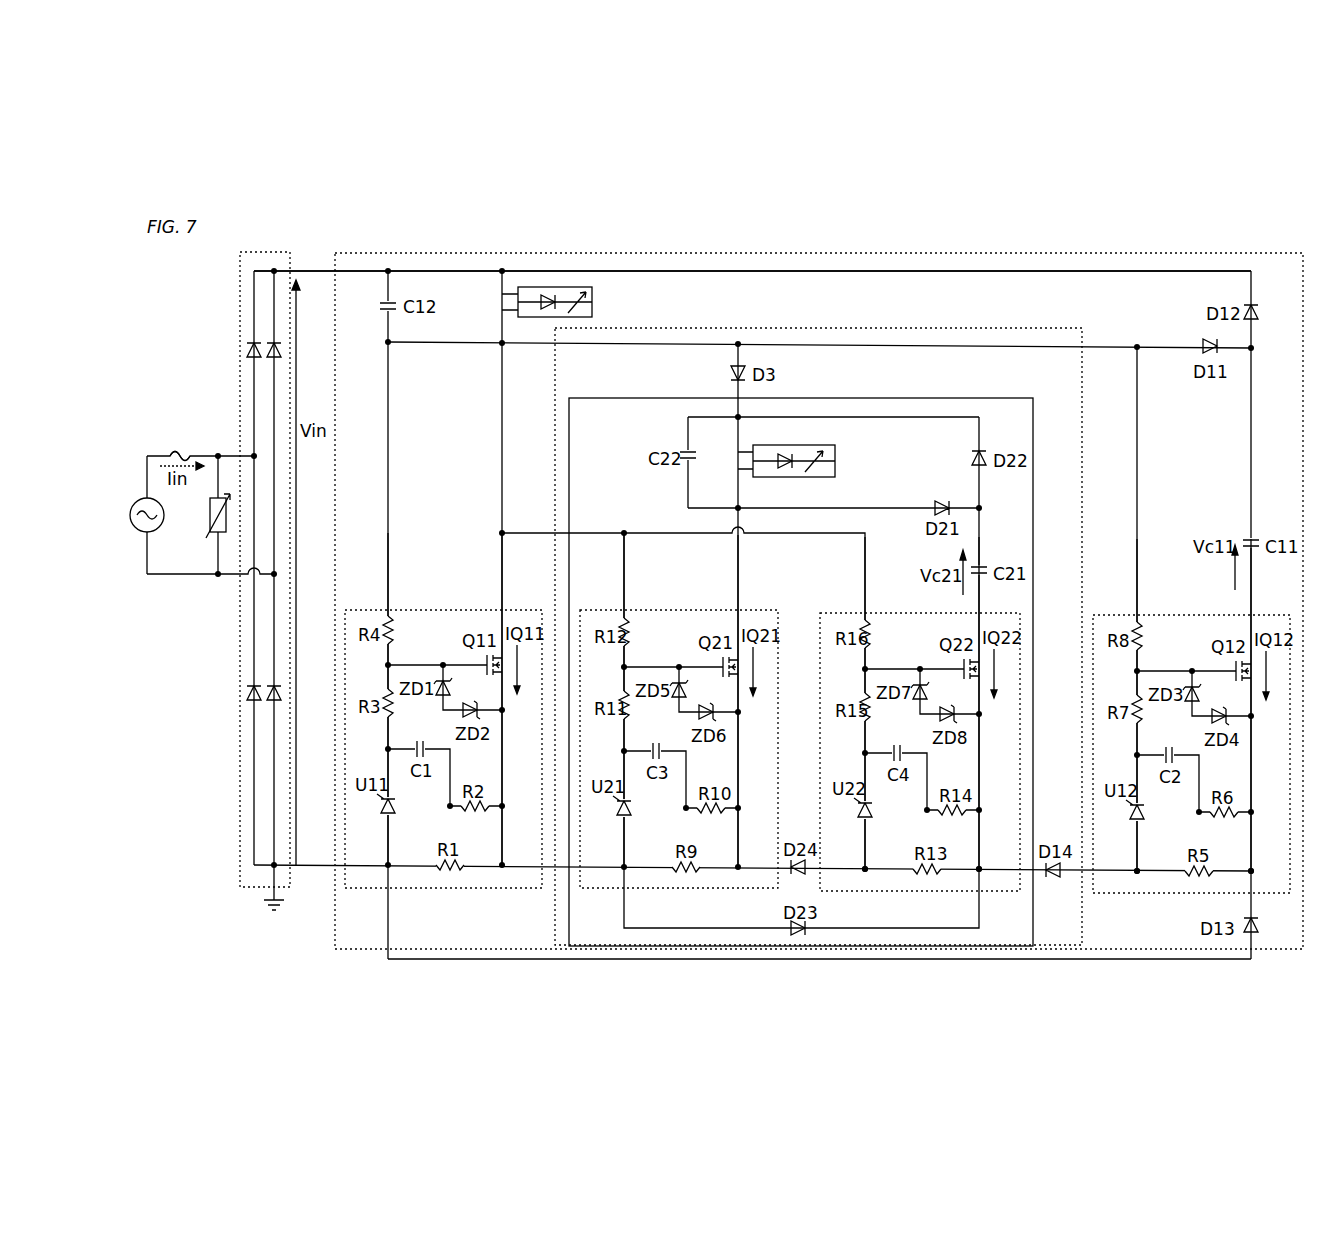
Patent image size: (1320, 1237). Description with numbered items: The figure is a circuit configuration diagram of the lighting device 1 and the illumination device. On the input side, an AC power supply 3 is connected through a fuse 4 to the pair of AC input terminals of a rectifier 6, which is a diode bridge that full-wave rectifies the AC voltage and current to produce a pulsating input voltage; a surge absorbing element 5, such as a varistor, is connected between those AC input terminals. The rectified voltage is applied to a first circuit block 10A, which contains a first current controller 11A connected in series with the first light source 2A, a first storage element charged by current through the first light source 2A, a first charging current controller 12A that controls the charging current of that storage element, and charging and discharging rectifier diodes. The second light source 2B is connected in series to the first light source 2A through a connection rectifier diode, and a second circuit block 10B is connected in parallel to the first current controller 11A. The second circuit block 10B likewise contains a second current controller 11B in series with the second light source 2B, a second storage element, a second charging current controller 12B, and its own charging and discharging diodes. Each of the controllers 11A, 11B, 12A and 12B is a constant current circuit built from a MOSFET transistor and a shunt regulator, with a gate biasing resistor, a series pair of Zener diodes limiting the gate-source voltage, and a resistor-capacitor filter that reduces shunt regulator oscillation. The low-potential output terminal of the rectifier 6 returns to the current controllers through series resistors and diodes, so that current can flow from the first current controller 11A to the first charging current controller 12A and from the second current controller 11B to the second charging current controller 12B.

The lighting device 1 is at (712, 243).
The first light source 2A is at (592, 300).
The second light source 2B is at (835, 460).
The AC power supply 3 is at (158, 528).
The fuse 4 is at (183, 453).
The surge absorbing element 5 is at (210, 521).
The rectifier 6 is at (234, 278).
The first circuit block 10A is at (872, 254).
The second circuit block 10B is at (974, 394).
The first current controller 11A is at (425, 600).
The second current controller 11B is at (668, 600).
The first charging current controller 12A is at (1113, 605).
The second charging current controller 12B is at (838, 602).